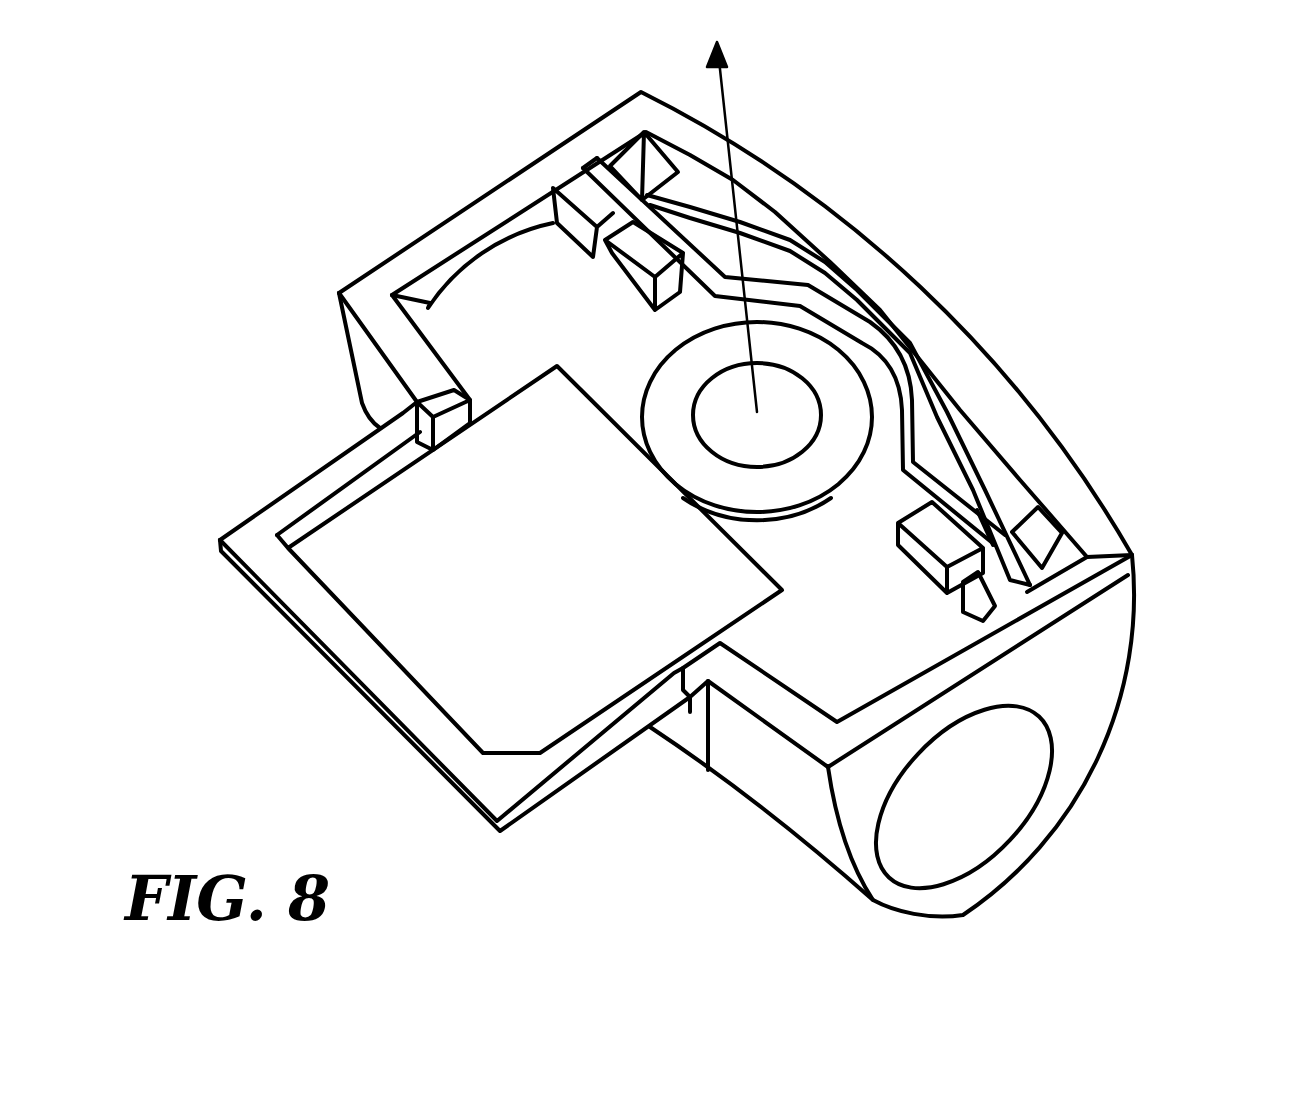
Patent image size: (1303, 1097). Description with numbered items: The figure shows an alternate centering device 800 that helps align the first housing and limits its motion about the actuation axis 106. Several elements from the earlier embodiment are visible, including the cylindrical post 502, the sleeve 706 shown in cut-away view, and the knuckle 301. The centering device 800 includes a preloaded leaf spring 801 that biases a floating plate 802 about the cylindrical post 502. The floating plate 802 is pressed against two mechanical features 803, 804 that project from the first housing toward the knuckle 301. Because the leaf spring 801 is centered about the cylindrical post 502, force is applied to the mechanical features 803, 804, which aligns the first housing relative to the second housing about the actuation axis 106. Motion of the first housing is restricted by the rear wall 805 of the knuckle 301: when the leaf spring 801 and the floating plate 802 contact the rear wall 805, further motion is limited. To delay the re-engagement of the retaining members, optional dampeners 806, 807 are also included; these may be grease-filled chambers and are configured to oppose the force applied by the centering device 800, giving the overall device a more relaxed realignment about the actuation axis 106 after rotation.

The actuation axis 106 is at (727, 108).
The knuckle 301 is at (1078, 737).
The cylindrical post 502 is at (797, 423).
The sleeve 706 is at (812, 463).
The centering device 800 is at (888, 283).
The preloaded leaf spring 801 is at (982, 433).
The floating plate 802 is at (985, 527).
The mechanical feature 803 is at (643, 262).
The mechanical feature 804 is at (943, 540).
The rear wall 805 is at (773, 212).
The dampener 806 is at (630, 161).
The dampener 807 is at (1048, 537).